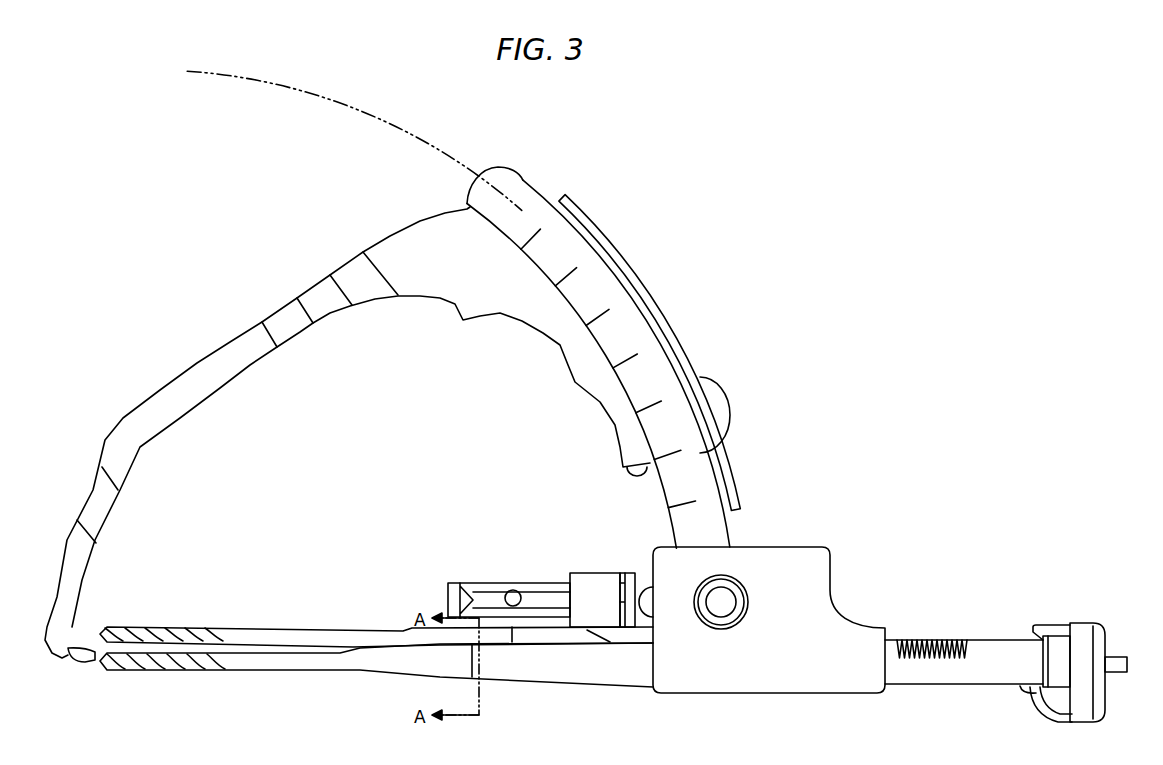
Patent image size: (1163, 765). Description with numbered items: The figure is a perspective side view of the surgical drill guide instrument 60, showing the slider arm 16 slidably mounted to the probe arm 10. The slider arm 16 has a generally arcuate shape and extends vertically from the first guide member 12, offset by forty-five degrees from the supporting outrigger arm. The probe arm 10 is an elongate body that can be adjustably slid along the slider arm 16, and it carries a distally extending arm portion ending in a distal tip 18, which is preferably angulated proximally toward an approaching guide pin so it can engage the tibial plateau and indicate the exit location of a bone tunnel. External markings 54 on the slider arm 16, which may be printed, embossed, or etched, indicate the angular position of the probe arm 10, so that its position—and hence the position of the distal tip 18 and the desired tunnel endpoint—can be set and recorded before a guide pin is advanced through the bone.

The probe arm 10 is at (381, 237).
The first guide member 12 is at (821, 578).
The slider arm 16 is at (497, 170).
The distal tip 18 is at (78, 664).
The external markings 54 is at (657, 397).
The surgical drill guide instrument 60 is at (740, 241).